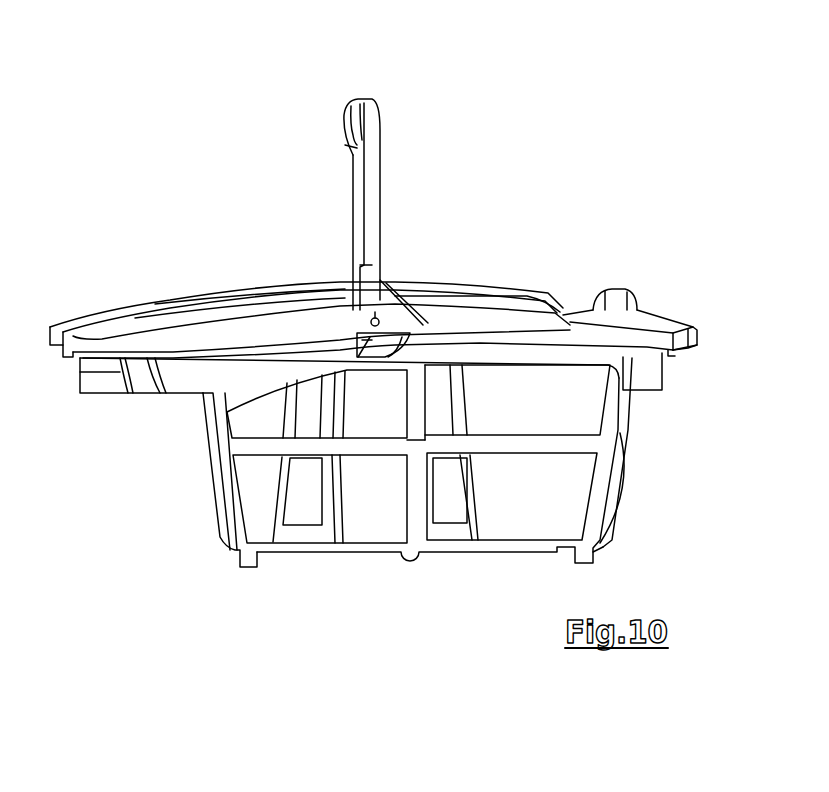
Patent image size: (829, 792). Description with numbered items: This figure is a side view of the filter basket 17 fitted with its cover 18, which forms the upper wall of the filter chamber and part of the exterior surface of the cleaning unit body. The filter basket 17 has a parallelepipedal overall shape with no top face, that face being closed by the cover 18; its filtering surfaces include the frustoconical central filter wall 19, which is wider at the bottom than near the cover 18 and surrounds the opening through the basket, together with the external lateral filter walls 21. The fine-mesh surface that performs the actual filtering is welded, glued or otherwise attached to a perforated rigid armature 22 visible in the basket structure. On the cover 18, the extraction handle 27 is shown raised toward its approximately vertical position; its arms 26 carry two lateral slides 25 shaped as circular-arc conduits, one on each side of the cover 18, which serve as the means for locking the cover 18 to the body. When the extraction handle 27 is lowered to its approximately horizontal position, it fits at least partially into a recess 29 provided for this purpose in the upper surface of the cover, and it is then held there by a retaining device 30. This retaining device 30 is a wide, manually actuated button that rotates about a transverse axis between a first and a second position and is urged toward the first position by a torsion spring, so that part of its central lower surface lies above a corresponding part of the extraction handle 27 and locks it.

The filter basket 17 is at (370, 503).
The cover 18 is at (108, 338).
The central filter wall 19 is at (375, 495).
The external lateral filter walls 21 is at (527, 498).
The perforated rigid armature 22 is at (597, 507).
The lateral slides 25 is at (382, 293).
The arms 26 is at (367, 203).
The extraction handle 27 is at (278, 171).
The recess 29 is at (562, 320).
The retaining device 30 is at (625, 292).